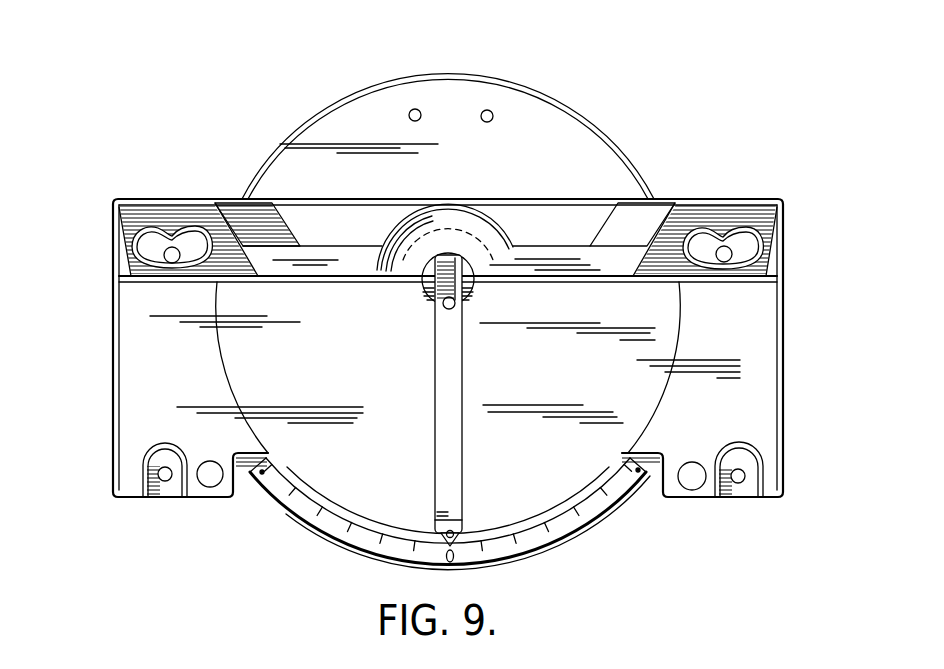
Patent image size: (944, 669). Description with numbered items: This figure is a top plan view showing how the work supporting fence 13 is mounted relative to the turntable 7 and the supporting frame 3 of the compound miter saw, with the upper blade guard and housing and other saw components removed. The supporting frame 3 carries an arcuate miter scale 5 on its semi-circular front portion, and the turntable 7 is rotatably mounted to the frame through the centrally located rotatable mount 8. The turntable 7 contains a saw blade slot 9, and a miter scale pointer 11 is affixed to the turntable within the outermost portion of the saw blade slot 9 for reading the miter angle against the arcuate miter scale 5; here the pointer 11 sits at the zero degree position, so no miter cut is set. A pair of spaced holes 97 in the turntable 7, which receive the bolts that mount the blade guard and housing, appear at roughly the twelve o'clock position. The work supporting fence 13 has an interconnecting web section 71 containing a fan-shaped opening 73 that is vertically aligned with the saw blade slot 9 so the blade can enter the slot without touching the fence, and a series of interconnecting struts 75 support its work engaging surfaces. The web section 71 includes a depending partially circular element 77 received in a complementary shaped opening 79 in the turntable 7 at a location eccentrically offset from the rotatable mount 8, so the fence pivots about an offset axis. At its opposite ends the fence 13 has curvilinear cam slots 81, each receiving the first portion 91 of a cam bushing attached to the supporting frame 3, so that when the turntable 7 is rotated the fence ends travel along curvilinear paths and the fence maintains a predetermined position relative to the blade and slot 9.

The supporting frame 3 is at (140, 411).
The arcuate miter scale 5 is at (536, 558).
The turntable 7 is at (556, 477).
The rotatable mount 8 is at (452, 311).
The saw blade slot 9 is at (451, 434).
The miter scale pointer 11 is at (462, 533).
The work supporting fence 13 is at (170, 197).
The interconnecting web section 71 is at (483, 236).
The fan-shaped opening 73 is at (466, 262).
The interconnecting struts 75 is at (117, 229).
The depending partially circularly-shaped element 77 is at (481, 197).
The complementary shaped opening 79 is at (428, 297).
The curvilinear cam slot 81 is at (192, 242).
The first portion of cam bushing 91 is at (165, 262).
The spaced holes 97 is at (416, 109).